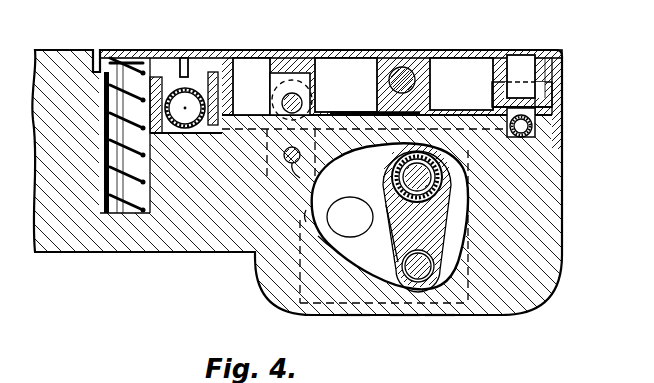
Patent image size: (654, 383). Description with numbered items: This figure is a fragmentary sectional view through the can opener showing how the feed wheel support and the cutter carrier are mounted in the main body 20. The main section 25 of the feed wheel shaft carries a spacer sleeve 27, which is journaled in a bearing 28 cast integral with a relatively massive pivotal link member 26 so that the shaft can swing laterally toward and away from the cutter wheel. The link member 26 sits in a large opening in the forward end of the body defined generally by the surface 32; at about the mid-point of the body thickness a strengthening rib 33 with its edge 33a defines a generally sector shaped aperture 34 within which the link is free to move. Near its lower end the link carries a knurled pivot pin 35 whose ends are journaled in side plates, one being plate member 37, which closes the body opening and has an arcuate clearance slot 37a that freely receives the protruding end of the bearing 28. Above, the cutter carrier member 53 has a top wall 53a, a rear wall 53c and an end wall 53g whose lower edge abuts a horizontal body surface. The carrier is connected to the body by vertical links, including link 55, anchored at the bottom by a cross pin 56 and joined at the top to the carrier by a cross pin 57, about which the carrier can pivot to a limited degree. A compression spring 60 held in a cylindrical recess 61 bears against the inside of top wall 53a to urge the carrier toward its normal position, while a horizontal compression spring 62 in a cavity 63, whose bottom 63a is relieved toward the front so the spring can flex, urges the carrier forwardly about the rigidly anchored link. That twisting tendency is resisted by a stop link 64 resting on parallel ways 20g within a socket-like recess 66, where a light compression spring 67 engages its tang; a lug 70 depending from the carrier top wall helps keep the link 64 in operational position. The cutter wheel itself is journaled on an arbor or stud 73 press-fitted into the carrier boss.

The main body 20 is at (116, 246).
The parallel ways 20g is at (540, 107).
The main section of feed wheel shaft 25 is at (442, 182).
The pivotal link member 26 is at (443, 203).
The spacer sleeve 27 is at (417, 217).
The bearing 28 is at (400, 184).
The surface 32 is at (352, 316).
The strengthening rib 33 is at (318, 238).
The edge of strengthening rib 33a is at (342, 252).
The sector shaped aperture 34 is at (380, 233).
The pivot pin 35 is at (436, 315).
The plate member 37 is at (402, 306).
The arcuate clearance slot 37a is at (306, 216).
The cutter carrier member 53 is at (333, 49).
The top wall of carrier member 53a is at (256, 50).
The rear wall of carrier member 53c is at (376, 52).
The end wall of carrier member 53g is at (556, 116).
The vertical link 55 is at (320, 113).
The cross pin 56 is at (292, 166).
The cross pin 57 is at (300, 98).
The compression spring 60 is at (146, 176).
The cylindrical recess 61 is at (108, 190).
The horizontal compression spring 62 is at (194, 60).
The cavity 63 is at (214, 134).
The bottom of cavity 63a is at (182, 136).
The stop link 64 is at (542, 90).
The socket-like recess 66 is at (563, 147).
The light compression spring 67 is at (520, 138).
The lug 70 is at (505, 65).
The arbor or stud 73 is at (428, 74).